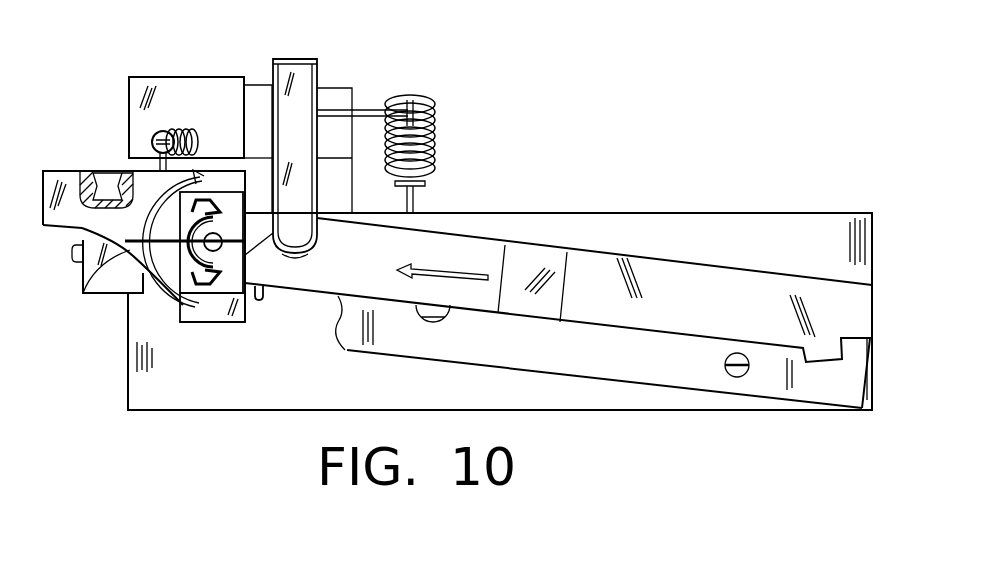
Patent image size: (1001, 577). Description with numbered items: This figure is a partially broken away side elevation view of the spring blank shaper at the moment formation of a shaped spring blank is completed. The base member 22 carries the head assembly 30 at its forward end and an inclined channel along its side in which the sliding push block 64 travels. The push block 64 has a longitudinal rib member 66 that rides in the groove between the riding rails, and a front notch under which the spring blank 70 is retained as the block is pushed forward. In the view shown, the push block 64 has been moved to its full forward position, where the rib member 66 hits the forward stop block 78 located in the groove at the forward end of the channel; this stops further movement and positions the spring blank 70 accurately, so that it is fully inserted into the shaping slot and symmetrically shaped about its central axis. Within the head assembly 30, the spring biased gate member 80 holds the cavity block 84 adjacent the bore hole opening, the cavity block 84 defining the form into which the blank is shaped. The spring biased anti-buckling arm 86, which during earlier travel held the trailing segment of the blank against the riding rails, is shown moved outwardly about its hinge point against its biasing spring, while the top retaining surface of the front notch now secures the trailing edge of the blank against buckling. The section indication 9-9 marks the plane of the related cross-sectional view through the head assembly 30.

The base member 22 is at (770, 222).
The head assembly 30 is at (177, 92).
The push block 64 is at (445, 247).
The longitudinal rib member 66 is at (265, 290).
The spring blank 70 is at (182, 303).
The forward stop block 78 is at (250, 297).
The gate member 80 is at (97, 225).
The cavity block 84 is at (240, 198).
The anti-buckling arm 86 is at (300, 72).
The section line 9-9 is at (90, 278).